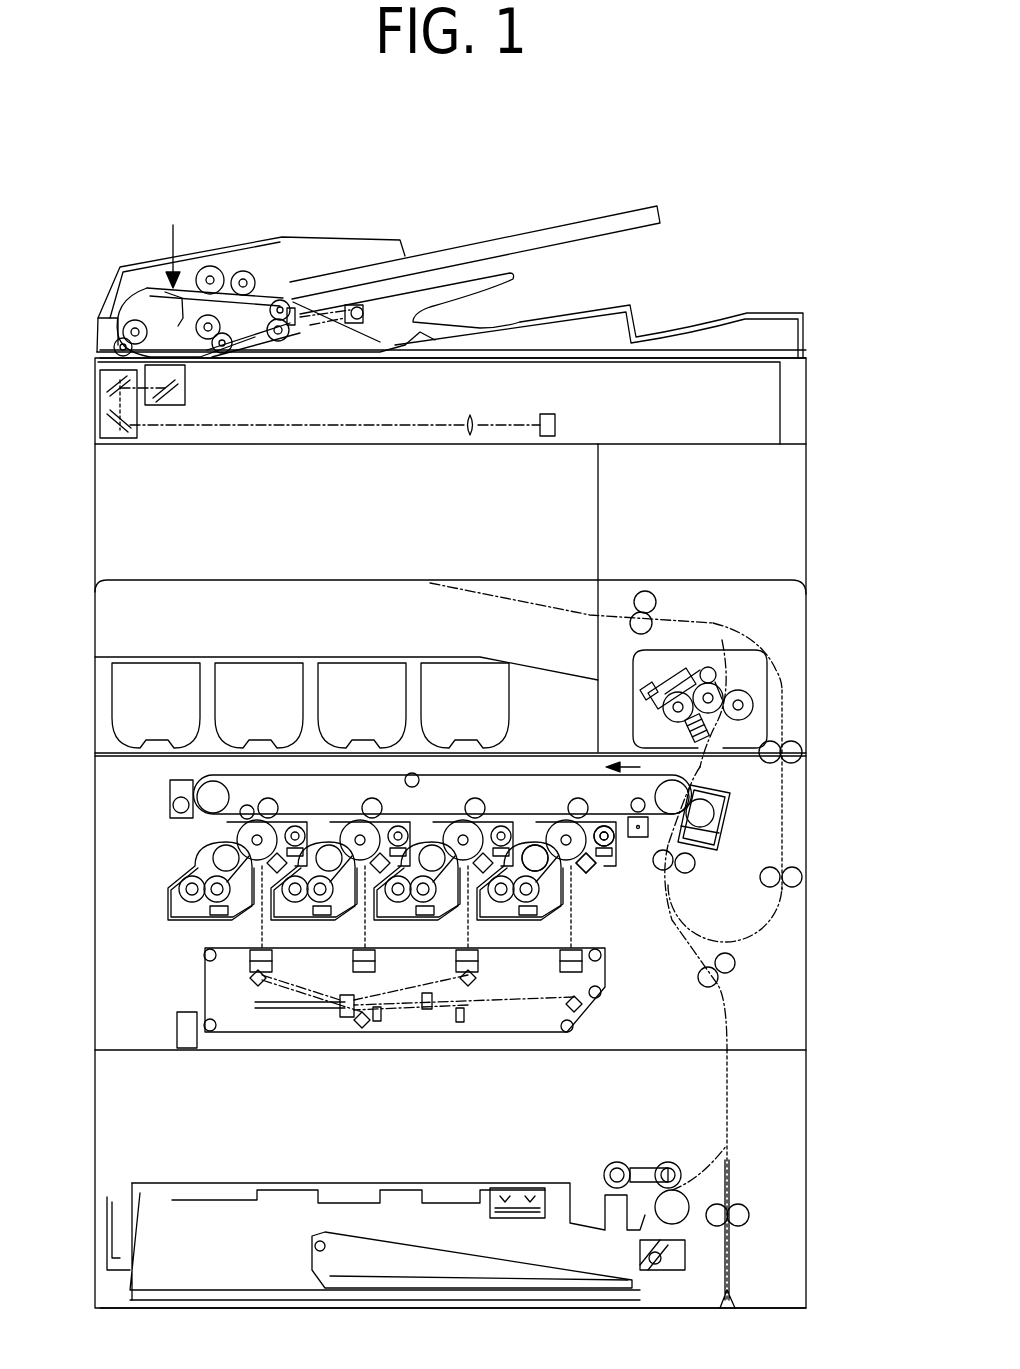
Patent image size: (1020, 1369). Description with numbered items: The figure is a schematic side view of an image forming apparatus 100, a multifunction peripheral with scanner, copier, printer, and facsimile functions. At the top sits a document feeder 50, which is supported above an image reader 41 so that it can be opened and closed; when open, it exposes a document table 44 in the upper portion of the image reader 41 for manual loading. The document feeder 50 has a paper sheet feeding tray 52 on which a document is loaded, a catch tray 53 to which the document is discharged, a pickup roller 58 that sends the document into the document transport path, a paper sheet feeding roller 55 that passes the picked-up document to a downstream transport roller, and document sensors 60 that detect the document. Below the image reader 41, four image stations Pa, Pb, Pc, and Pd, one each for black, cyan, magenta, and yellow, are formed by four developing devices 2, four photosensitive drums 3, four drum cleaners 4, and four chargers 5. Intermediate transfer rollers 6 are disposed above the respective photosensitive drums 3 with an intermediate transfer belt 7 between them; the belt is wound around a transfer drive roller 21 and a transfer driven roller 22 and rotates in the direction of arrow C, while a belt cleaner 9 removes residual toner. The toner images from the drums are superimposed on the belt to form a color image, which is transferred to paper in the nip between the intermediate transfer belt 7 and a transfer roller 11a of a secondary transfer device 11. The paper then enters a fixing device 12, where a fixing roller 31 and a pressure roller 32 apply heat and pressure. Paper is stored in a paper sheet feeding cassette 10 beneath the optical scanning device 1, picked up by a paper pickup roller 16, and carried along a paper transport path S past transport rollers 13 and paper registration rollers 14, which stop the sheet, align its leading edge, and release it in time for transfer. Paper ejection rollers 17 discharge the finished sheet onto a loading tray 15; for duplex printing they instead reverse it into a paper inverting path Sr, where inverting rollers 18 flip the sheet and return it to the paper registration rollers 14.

The image forming apparatus 100 is at (436, 137).
The image reader 41 is at (818, 400).
The document table 44 is at (655, 366).
The document feeder 50 is at (138, 262).
The document sensors 60 is at (184, 231).
The paper sheet feeding roller 55 is at (210, 265).
The pickup roller 58 is at (247, 270).
The paper sheet feeding tray 52 is at (525, 232).
The catch tray 53 is at (552, 305).
The loading tray 15 is at (230, 655).
The intermediate transfer belt 7 is at (528, 775).
The transfer driven roller 22 is at (215, 788).
The transfer drive roller 21 is at (690, 792).
The intermediate transfer rollers 6 is at (372, 797).
The belt cleaner 9 is at (168, 798).
The photosensitive drums 3 is at (568, 815).
The image station Pd is at (150, 902).
The image station Pc is at (334, 795).
The image station Pb is at (436, 795).
The image station Pa is at (550, 795).
The developing devices 2 is at (513, 922).
The drum cleaners 4 is at (614, 848).
The chargers 5 is at (592, 870).
The optical scanning device 1 is at (608, 985).
The paper ejection rollers 17 is at (645, 590).
The fixing device 12 is at (772, 672).
The fixing roller 31 is at (712, 685).
The pressure roller 32 is at (755, 705).
The inverting rollers 18 is at (802, 748).
The paper inverting path Sr is at (792, 766).
The arrow C is at (632, 755).
The transfer roller 11a is at (735, 810).
The secondary transfer device 11 is at (722, 838).
The paper registration rollers 14 is at (690, 873).
The transport rollers 13 is at (738, 968).
The paper transport path S is at (668, 930).
The paper sheet feeding cassette 10 is at (355, 1243).
The paper pickup roller 16 is at (617, 1160).